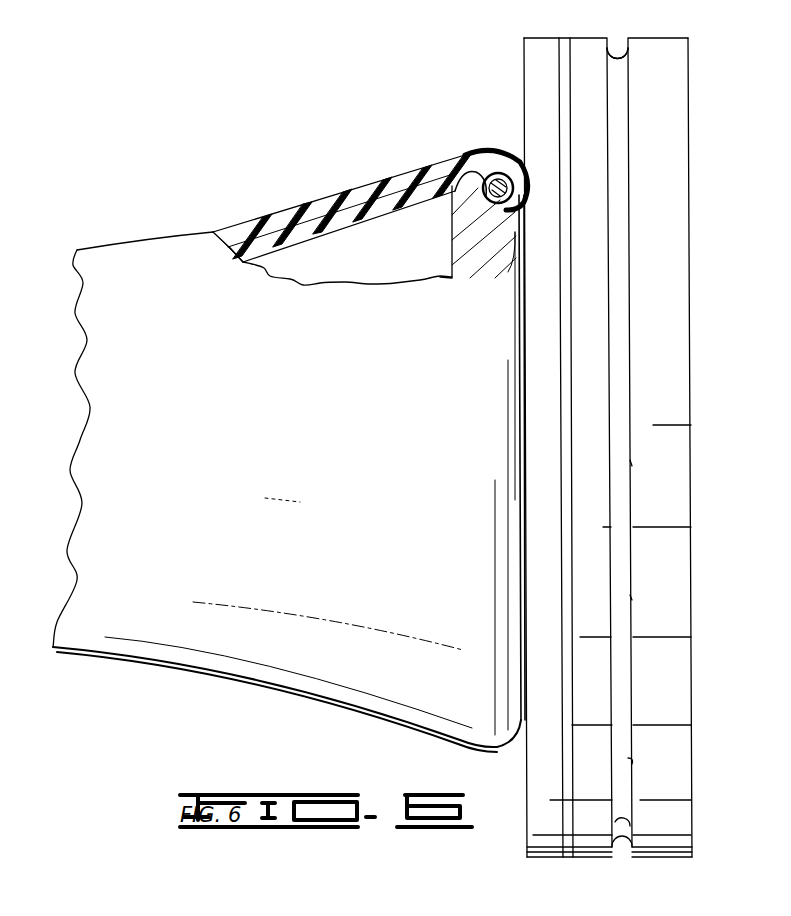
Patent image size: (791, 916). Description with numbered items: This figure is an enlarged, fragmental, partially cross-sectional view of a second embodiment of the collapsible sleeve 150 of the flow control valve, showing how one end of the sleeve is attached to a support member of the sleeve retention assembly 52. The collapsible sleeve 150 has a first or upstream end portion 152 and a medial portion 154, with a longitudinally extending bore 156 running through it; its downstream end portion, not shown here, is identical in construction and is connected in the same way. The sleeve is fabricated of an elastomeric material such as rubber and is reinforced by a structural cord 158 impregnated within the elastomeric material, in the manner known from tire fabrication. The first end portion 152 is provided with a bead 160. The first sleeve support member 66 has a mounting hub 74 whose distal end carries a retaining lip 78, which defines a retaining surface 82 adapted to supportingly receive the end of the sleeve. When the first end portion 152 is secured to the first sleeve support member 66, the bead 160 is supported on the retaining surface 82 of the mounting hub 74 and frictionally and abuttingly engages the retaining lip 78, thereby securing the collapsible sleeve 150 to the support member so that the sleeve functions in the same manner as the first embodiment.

The sleeve retention assembly 52 is at (670, 140).
The first sleeve support member 66 is at (583, 78).
The mounting hub 74 is at (448, 272).
The retaining lip 78 is at (447, 226).
The retaining surface 82 is at (512, 262).
The collapsible sleeve 150 is at (268, 140).
The first end portion 152 is at (370, 165).
The medial portion 154 is at (100, 258).
The bore 156 is at (397, 245).
The cord 158 is at (323, 230).
The bead 160 is at (508, 168).